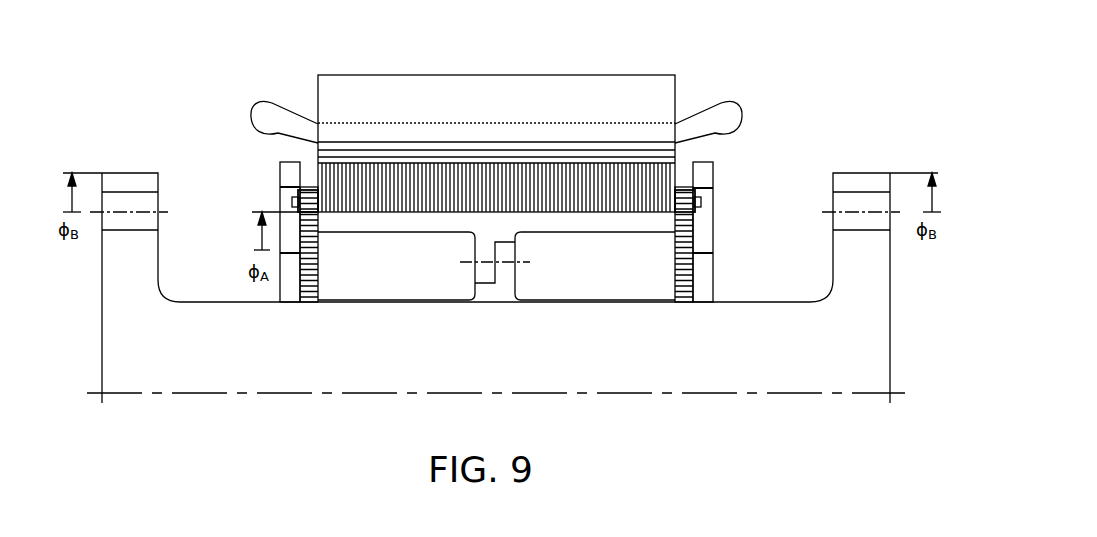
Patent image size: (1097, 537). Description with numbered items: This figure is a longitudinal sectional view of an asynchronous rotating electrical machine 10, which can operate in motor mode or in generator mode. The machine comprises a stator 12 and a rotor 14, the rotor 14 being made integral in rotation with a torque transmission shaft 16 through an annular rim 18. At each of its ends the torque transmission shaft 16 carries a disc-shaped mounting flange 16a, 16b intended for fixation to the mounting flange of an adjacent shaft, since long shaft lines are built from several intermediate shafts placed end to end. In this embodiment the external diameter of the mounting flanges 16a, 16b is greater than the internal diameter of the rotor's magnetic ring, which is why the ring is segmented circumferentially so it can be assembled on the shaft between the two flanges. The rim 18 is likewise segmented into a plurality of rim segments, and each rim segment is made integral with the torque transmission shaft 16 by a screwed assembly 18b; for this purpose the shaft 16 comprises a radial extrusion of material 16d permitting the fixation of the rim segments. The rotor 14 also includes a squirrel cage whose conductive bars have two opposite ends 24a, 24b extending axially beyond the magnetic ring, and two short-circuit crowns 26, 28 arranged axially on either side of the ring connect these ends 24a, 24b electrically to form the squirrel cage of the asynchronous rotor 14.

The asynchronous rotating electrical machine 10 is at (840, 113).
The stator 12 is at (658, 92).
The rotor 14 is at (708, 150).
The torque transmission shaft 16 is at (713, 370).
The mounting flange 16a is at (122, 353).
The mounting flange 16b is at (878, 313).
The radial extrusion of material 16d is at (503, 283).
The annular rim 18 is at (423, 222).
The screwed assembly 18b is at (468, 265).
The end of conductive element 24a is at (307, 172).
The end of conductive element 24b is at (697, 172).
The short-circuit crown 26 is at (290, 180).
The short-circuit crown 28 is at (708, 178).